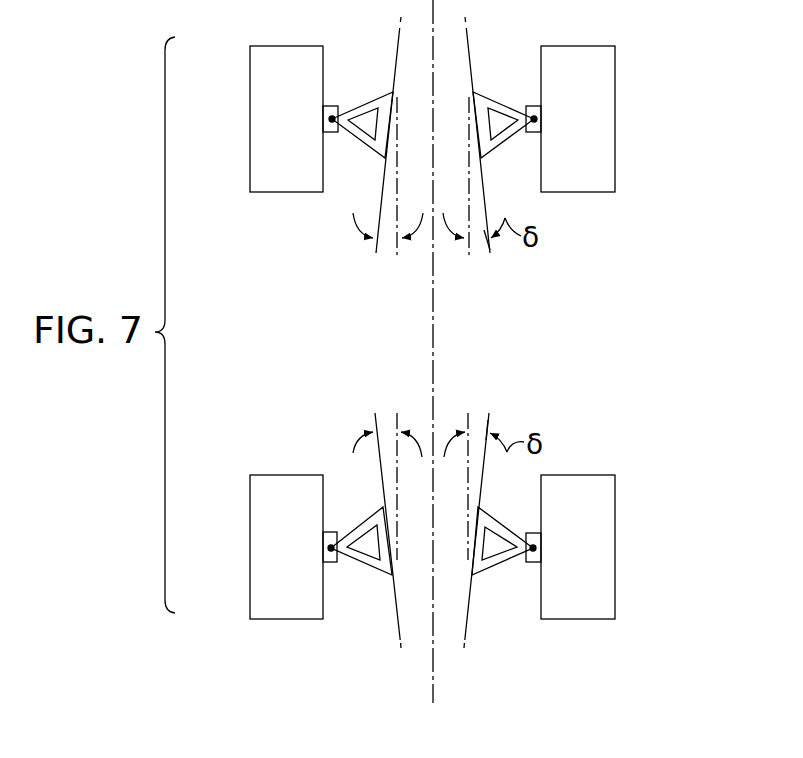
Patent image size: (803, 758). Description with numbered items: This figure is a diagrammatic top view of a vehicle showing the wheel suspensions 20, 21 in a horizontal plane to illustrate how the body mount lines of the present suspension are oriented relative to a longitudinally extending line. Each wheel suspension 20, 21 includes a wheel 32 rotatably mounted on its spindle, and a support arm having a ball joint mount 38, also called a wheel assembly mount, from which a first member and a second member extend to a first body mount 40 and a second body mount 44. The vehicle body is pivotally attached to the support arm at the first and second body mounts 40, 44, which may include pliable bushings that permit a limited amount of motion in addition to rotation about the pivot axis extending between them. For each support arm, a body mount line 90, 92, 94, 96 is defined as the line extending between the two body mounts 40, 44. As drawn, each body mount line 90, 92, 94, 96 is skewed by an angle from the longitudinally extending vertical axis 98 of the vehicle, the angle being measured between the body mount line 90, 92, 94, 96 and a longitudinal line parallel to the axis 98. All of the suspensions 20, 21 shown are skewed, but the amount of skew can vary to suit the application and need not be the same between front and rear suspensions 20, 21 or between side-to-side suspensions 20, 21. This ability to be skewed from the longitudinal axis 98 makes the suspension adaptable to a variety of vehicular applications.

The wheel suspension 20 is at (355, 136).
The wheel suspension 21 is at (510, 133).
The wheel 32 is at (260, 98).
The ball joint mount 38 is at (330, 119).
The first body mount 40 is at (393, 92).
The second body mount 44 is at (385, 160).
The body mount line 90 is at (373, 418).
The body mount line 92 is at (489, 420).
The body mount line 94 is at (376, 247).
The body mount line 96 is at (488, 254).
The longitudinally extending vertical axis 98 is at (433, 685).